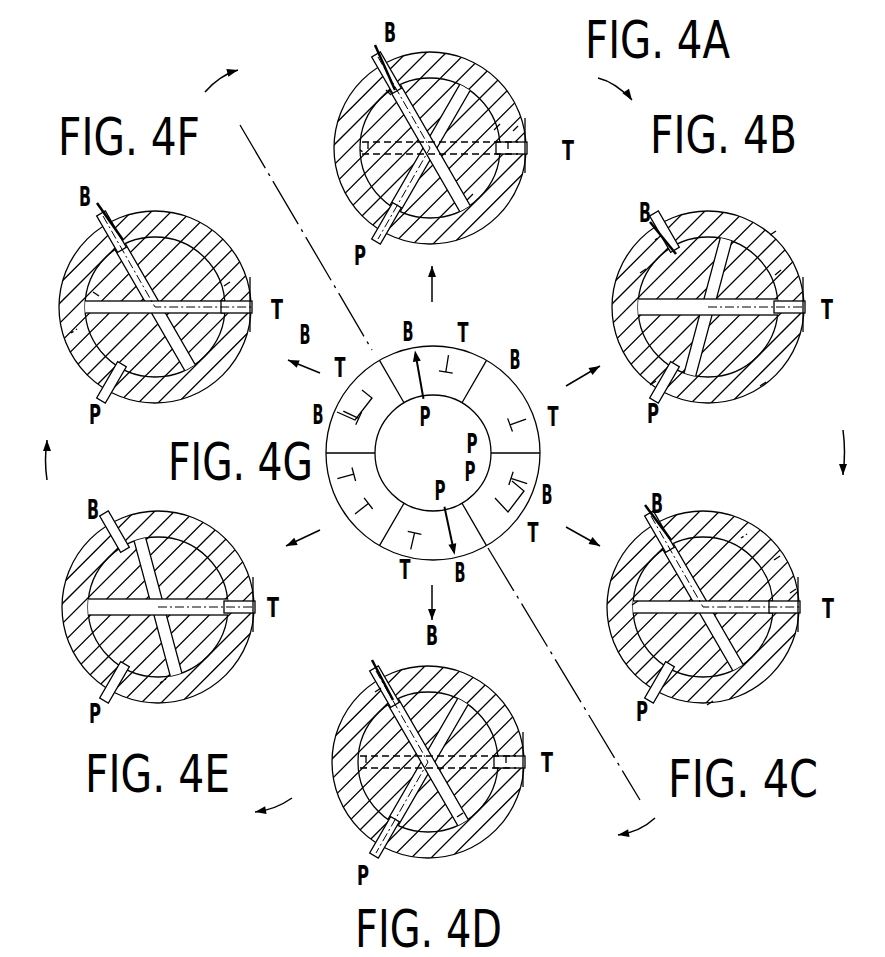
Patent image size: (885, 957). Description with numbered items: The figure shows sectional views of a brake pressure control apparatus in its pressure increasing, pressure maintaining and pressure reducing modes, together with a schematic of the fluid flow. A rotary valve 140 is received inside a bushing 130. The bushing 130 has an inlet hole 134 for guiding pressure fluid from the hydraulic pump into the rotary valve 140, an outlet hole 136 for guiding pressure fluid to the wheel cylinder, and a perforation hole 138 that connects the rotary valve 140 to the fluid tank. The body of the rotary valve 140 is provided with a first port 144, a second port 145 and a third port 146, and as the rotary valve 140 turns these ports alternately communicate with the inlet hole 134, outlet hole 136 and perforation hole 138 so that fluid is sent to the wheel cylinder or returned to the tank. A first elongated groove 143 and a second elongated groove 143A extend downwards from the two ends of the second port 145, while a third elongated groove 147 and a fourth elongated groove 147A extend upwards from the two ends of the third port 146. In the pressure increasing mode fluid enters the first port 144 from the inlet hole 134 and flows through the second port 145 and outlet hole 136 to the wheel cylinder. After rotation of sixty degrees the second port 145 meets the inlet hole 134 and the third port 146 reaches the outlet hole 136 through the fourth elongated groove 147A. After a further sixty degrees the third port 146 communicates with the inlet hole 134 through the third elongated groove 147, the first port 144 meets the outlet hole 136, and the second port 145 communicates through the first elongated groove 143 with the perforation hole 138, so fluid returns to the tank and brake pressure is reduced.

In FIG. 4A, the bushing 130 is at (493, 80).
In FIG. 4B, the bushing 130 is at (732, 222).
In FIG. 4C, the bushing 130 is at (703, 607).
In FIG. 4D, the bushing 130 is at (428, 762).
In FIG. 4E, the bushing 130 is at (158, 607).
In FIG. 4F, the bushing 130 is at (155, 307).
In FIG. 4A, the inlet hole 134 is at (395, 228).
In FIG. 4B, the inlet hole 134 is at (667, 402).
In FIG. 4C, the inlet hole 134 is at (670, 705).
In FIG. 4D, the inlet hole 134 is at (393, 850).
In FIG. 4E, the inlet hole 134 is at (118, 679).
In FIG. 4F, the inlet hole 134 is at (113, 379).
In FIG. 4A, the outlet hole 136 is at (396, 55).
In FIG. 4B, the outlet hole 136 is at (679, 215).
In FIG. 4C, the outlet hole 136 is at (673, 516).
In FIG. 4D, the outlet hole 136 is at (388, 678).
In FIG. 4E, the outlet hole 136 is at (115, 607).
In FIG. 4F, the outlet hole 136 is at (117, 214).
In FIG. 4A, the perforation hole 138 is at (527, 175).
In FIG. 4B, the perforation hole 138 is at (805, 333).
In FIG. 4C, the perforation hole 138 is at (793, 644).
In FIG. 4D, the perforation hole 138 is at (509, 759).
In FIG. 4E, the perforation hole 138 is at (239, 604).
In FIG. 4F, the perforation hole 138 is at (250, 328).
In FIG. 4A, the rotary valve 140 is at (515, 128).
In FIG. 4B, the rotary valve 140 is at (778, 272).
In FIG. 4A, the first elongated groove 143 is at (388, 92).
In FIG. 4B, the first elongated groove 143 is at (773, 233).
In FIG. 4C, the first elongated groove 143 is at (793, 591).
In FIG. 4D, the first elongated groove 143 is at (460, 815).
In FIG. 4F, the first elongated groove 143 is at (95, 294).
In FIG. 4A, the second elongated groove 143A is at (470, 197).
In FIG. 4B, the second elongated groove 143A is at (653, 383).
In FIG. 4C, the second elongated groove 143A is at (635, 603).
In FIG. 4D, the second elongated groove 143A is at (378, 690).
In FIG. 4F, the second elongated groove 143A is at (227, 284).
In FIG. 4A, the first port 144 is at (460, 97).
In FIG. 4B, the first port 144 is at (780, 350).
In FIG. 4C, the first port 144 is at (725, 533).
In FIG. 4D, the first port 144 is at (460, 712).
In FIG. 4E, the first port 144 is at (212, 611).
In FIG. 4F, the first port 144 is at (193, 366).
In FIG. 4A, the second port 145 is at (467, 182).
In FIG. 4B, the second port 145 is at (725, 378).
In FIG. 4C, the second port 145 is at (660, 614).
In FIG. 4D, the second port 145 is at (477, 818).
In FIG. 4E, the second port 145 is at (180, 561).
In FIG. 4F, the second port 145 is at (187, 261).
In FIG. 4A, the third port 146 is at (497, 127).
In FIG. 4B, the third port 146 is at (642, 271).
In FIG. 4C, the third port 146 is at (777, 558).
In FIG. 4E, the third port 146 is at (163, 681).
In FIG. 4F, the third port 146 is at (73, 331).
In FIG. 4A, the third elongated groove 147 is at (508, 142).
In FIG. 4B, the third elongated groove 147 is at (763, 384).
In FIG. 4C, the third elongated groove 147 is at (710, 703).
In FIG. 4D, the third elongated groove 147 is at (438, 762).
In FIG. 4A, the fourth elongated groove 147A is at (363, 153).
In FIG. 4B, the fourth elongated groove 147A is at (658, 238).
In FIG. 4C, the fourth elongated groove 147A is at (744, 536).